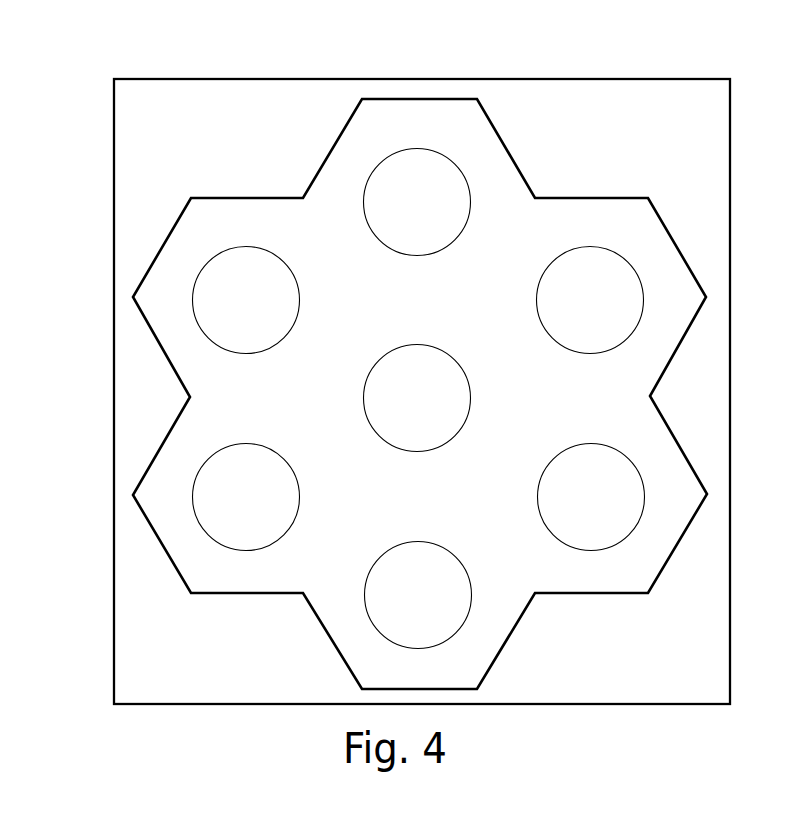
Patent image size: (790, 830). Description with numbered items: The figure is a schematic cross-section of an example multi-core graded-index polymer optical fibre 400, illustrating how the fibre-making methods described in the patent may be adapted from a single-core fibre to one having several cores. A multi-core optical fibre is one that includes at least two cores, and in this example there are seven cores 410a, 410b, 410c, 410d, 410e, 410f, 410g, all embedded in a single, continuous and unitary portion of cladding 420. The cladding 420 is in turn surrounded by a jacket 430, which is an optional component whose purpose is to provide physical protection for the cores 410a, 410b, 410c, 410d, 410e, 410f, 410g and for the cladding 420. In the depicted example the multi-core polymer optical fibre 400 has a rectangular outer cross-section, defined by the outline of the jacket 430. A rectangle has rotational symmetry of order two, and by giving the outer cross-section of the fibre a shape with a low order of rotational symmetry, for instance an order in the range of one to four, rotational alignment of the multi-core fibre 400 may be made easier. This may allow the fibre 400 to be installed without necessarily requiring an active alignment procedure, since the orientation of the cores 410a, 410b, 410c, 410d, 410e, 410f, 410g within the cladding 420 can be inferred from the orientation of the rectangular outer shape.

The multi-core polymer optical fibre 400 is at (106, 75).
The jacket 430 is at (114, 232).
The cladding 420 is at (438, 134).
The core 410a is at (417, 202).
The core 410b is at (590, 300).
The core 410c is at (591, 497).
The core 410d is at (418, 595).
The core 410e is at (246, 497).
The core 410f is at (246, 300).
The core 410g is at (417, 398).